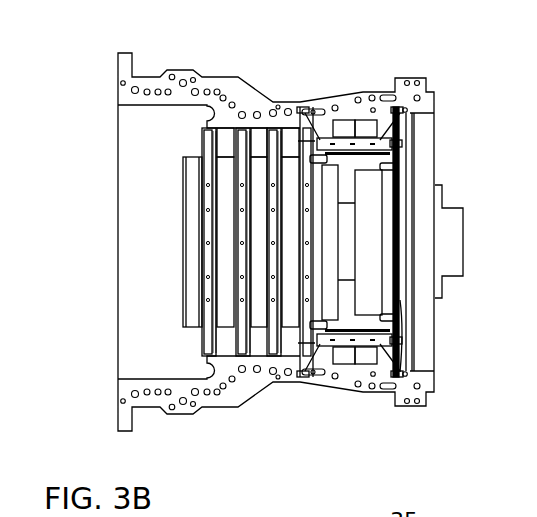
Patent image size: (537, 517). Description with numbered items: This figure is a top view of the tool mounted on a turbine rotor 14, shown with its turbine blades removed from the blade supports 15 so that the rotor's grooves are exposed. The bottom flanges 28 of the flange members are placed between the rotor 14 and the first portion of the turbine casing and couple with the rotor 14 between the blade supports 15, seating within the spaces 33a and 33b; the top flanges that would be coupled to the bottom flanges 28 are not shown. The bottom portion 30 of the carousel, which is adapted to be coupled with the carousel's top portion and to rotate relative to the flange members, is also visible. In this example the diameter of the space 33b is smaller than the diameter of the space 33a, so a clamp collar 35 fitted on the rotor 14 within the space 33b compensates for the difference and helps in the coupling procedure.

The rotor 14 is at (452, 245).
The blade supports 15 is at (367, 200).
The bottom flanges 28 is at (300, 110).
The bottom portion 30 is at (352, 143).
The space 33a is at (310, 341).
The space 33b is at (390, 320).
The clamp collar 35 is at (398, 300).